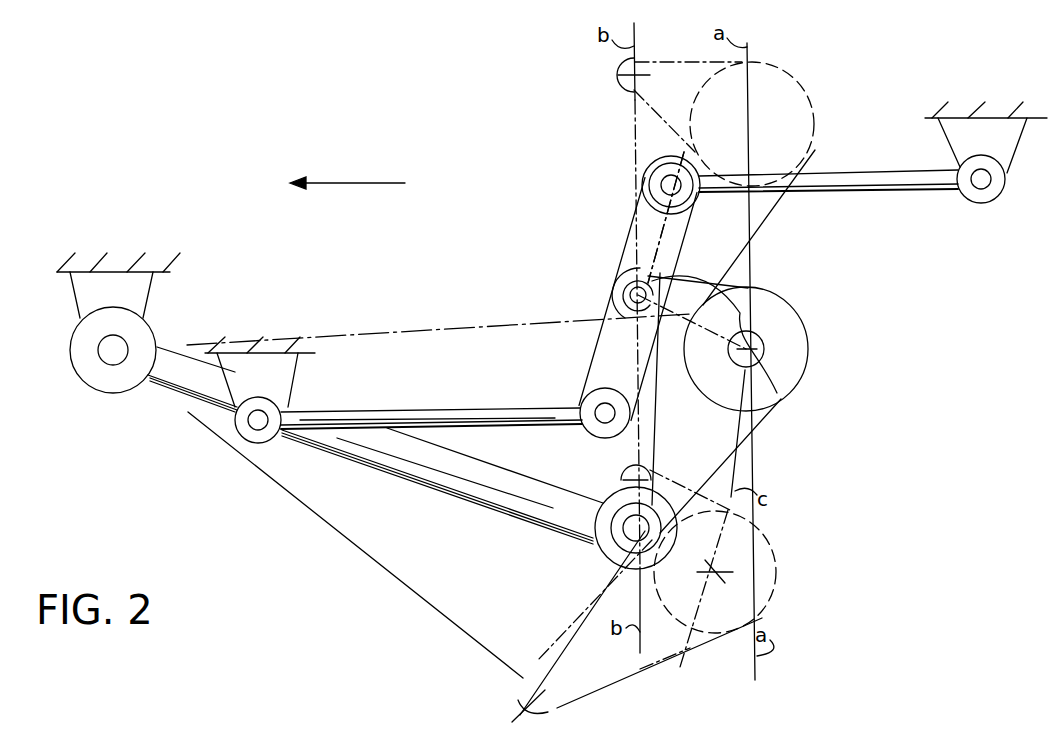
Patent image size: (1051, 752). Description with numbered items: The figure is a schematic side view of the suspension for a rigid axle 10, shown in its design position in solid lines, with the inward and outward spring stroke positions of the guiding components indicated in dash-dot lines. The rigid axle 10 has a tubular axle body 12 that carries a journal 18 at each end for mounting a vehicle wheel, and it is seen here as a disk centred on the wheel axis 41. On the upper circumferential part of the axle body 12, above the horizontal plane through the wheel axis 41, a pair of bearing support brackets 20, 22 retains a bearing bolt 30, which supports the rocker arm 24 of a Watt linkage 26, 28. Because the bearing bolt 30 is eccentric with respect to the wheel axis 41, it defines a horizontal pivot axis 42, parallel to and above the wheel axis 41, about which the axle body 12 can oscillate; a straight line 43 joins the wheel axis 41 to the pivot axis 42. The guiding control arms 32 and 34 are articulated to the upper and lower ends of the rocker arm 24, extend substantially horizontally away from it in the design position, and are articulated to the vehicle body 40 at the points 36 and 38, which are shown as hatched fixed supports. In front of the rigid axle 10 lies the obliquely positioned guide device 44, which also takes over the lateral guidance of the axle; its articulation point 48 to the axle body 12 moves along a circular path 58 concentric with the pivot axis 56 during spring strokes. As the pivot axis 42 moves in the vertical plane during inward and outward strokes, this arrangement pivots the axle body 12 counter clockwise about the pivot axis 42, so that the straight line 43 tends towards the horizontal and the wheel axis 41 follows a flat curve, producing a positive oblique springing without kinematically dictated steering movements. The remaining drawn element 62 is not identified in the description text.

The rigid axle 10 is at (812, 372).
The tubular axle body 12 is at (781, 322).
The journal 18 is at (732, 345).
The bearing support bracket 20 is at (731, 388).
The bearing support bracket 22 is at (590, 494).
The rocker arm 24 is at (622, 256).
The Watt linkage 26 is at (603, 178).
The Watt linkage 28 is at (666, 217).
The bearing bolt 30 is at (665, 280).
The guiding control arm 32 is at (853, 175).
The guiding control arm 34 is at (462, 408).
The articulation point 36 is at (258, 425).
The articulation point 38 is at (981, 186).
The vehicle body 40 is at (982, 115).
The wheel axis 41 is at (764, 350).
The pivot axis 42 is at (627, 295).
The straight line 43 is at (692, 338).
The guide device 44 is at (394, 470).
The articulation point 48 is at (612, 537).
The pivot axis 56 is at (113, 352).
The circular path 58 is at (520, 698).
The belt 62 is at (500, 485).